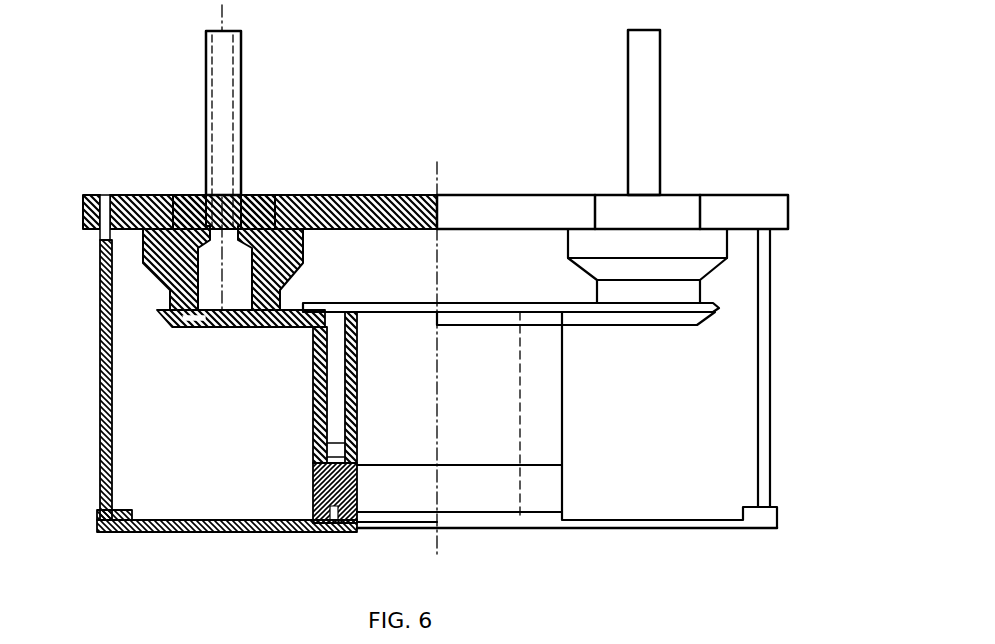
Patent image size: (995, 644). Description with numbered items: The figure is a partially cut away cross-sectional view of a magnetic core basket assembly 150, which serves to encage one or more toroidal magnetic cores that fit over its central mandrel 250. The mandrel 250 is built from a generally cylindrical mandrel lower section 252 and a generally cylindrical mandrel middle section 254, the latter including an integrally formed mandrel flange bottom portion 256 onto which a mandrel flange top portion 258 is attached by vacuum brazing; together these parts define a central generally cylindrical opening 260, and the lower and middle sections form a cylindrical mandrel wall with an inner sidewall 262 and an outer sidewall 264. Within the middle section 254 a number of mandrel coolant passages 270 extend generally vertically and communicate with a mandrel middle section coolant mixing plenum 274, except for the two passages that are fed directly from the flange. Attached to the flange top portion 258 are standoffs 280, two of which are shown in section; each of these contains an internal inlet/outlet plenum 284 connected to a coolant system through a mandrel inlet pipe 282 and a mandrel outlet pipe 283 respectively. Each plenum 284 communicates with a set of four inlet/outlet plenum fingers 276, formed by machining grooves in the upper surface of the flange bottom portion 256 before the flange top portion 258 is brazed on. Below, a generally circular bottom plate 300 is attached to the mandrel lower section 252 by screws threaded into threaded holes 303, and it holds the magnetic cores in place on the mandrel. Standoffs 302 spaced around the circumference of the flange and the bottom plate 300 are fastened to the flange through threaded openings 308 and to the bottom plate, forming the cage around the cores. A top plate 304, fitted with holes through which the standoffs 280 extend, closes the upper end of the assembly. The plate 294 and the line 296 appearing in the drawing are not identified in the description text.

The magnetic core basket assembly 150 is at (352, 185).
The mandrel 250 is at (590, 428).
The mandrel lower section 252 is at (540, 493).
The mandrel middle section 254 is at (540, 393).
The mandrel flange bottom portion 256 is at (624, 327).
The mandrel flange top portion 258 is at (712, 304).
The central generally cylindrical opening 260 is at (500, 545).
The inner sidewall 262 is at (372, 428).
The outer sidewall 264 is at (277, 428).
The mandrel coolant passages 270 is at (334, 400).
The mandrel middle section coolant mixing plenum 274 is at (313, 460).
The inlet/outlet plenum fingers 276 is at (228, 328).
The standoffs 280 is at (584, 249).
The mandrel inlet pipe 282 is at (662, 134).
The mandrel outlet pipe 283 is at (224, 136).
The inlet/outlet plenum 284 is at (236, 272).
The plate 294 is at (718, 312).
The port line 296 is at (540, 465).
The bottom plate 300 is at (680, 528).
The standoffs 302 is at (772, 466).
The threaded holes 303 is at (341, 532).
The top plate 304 is at (788, 211).
The threaded openings 308 is at (103, 182).